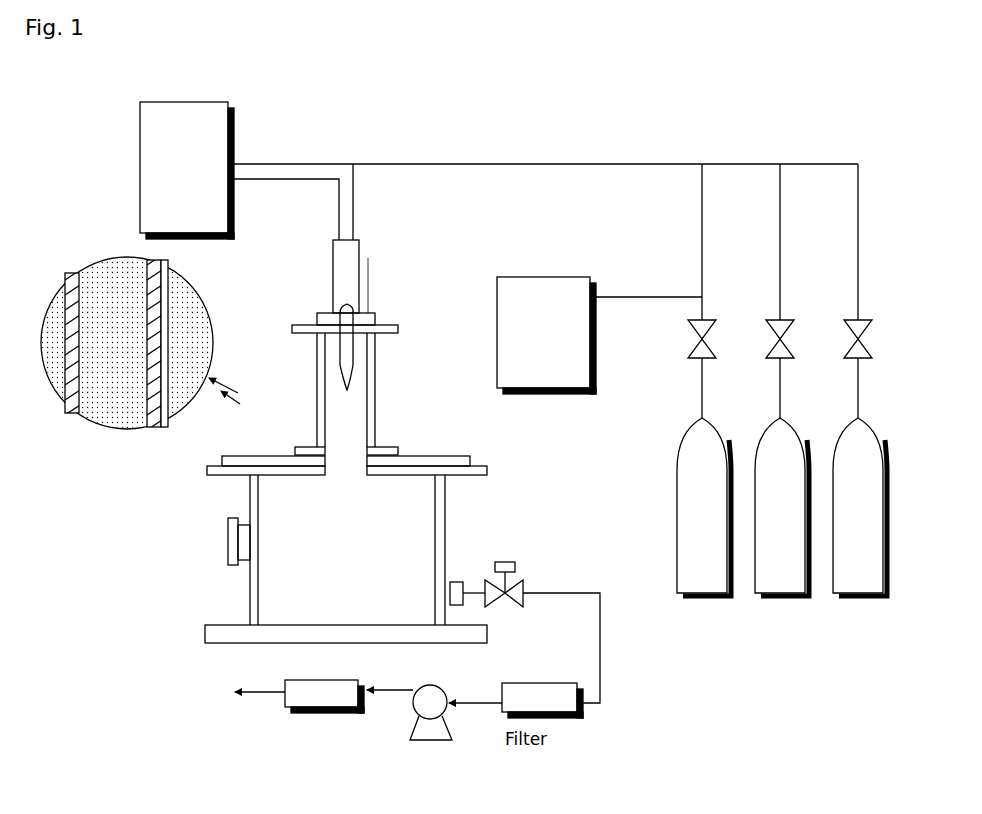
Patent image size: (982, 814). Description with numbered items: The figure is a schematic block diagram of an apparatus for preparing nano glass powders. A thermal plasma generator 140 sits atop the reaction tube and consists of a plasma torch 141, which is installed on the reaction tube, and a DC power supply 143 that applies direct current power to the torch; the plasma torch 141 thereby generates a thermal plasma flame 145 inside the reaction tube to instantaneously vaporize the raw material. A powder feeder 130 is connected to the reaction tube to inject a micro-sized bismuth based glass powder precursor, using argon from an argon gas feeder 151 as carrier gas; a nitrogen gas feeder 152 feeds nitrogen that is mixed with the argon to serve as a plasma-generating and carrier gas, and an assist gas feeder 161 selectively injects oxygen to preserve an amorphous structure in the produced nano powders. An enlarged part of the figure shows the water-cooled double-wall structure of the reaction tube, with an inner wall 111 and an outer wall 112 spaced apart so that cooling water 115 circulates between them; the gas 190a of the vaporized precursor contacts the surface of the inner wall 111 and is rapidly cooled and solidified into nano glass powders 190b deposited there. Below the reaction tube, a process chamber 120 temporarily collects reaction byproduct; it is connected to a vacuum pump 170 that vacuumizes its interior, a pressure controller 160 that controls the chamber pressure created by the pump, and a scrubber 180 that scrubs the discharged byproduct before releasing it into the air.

The DC power supply 143 is at (185, 102).
The plasma torch 141 is at (333, 265).
The thermal plasma generator 140 is at (372, 261).
The thermal plasma flame 145 is at (353, 368).
The process chamber 120 is at (272, 593).
The pressure controller 160 is at (523, 586).
The vacuum pump 170 is at (441, 686).
The scrubber 180 is at (285, 682).
The powder feeder 130 is at (545, 277).
The argon gas feeder 151 is at (703, 596).
The nitrogen gas feeder 152 is at (781, 596).
The assist gas feeder 161 is at (859, 596).
The cooling water 115 is at (98, 258).
The outer wall 112 is at (72, 418).
The inner wall 111 is at (150, 428).
The gas of the vaporized glass powder precursor 190a is at (187, 298).
The nano glass powders 190b is at (317, 416).